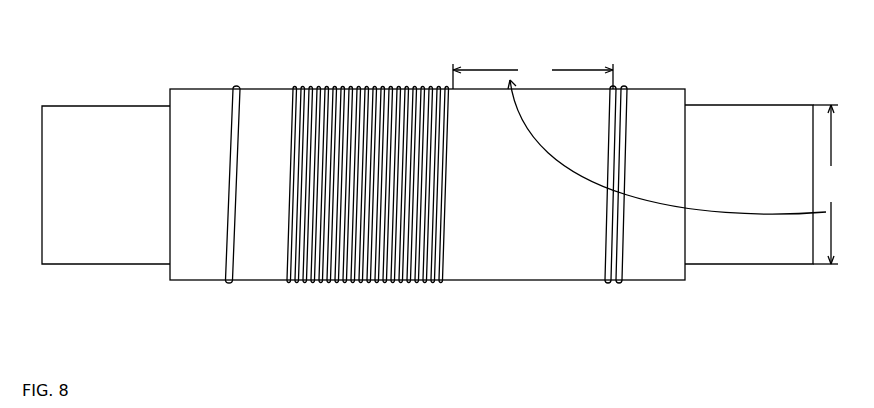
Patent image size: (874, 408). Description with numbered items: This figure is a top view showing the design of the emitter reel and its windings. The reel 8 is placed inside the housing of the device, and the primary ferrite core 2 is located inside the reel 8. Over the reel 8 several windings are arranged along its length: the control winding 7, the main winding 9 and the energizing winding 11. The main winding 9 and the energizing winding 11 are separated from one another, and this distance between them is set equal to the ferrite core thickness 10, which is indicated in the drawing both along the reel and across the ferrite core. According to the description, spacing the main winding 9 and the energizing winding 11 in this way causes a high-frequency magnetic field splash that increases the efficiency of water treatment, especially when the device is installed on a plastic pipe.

The primary ferrite core 2 is at (129, 247).
The control winding 7 is at (229, 73).
The reel 8 is at (268, 263).
The main winding 9 is at (380, 73).
The ferrite core thickness 10 is at (649, 160).
The energizing winding 11 is at (635, 73).